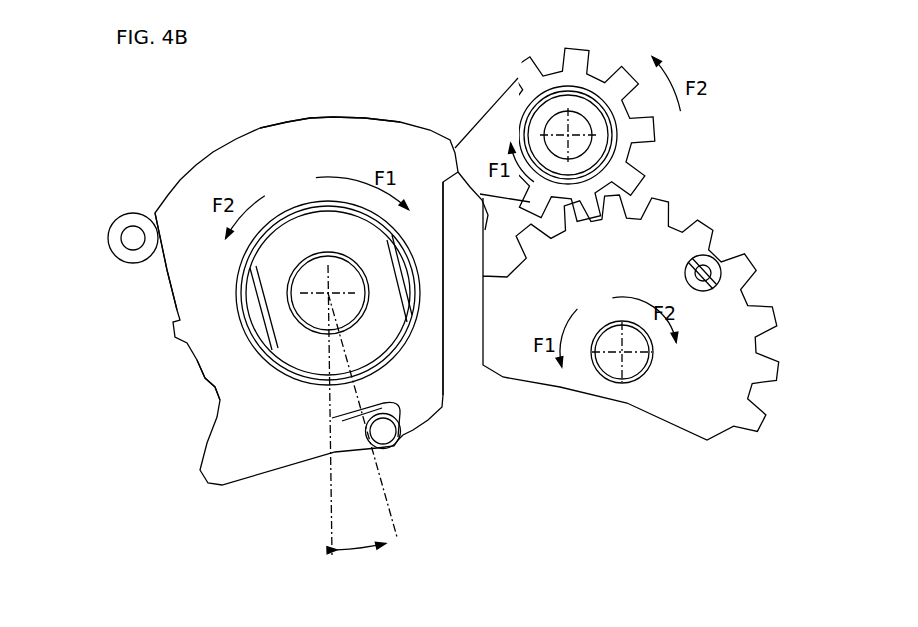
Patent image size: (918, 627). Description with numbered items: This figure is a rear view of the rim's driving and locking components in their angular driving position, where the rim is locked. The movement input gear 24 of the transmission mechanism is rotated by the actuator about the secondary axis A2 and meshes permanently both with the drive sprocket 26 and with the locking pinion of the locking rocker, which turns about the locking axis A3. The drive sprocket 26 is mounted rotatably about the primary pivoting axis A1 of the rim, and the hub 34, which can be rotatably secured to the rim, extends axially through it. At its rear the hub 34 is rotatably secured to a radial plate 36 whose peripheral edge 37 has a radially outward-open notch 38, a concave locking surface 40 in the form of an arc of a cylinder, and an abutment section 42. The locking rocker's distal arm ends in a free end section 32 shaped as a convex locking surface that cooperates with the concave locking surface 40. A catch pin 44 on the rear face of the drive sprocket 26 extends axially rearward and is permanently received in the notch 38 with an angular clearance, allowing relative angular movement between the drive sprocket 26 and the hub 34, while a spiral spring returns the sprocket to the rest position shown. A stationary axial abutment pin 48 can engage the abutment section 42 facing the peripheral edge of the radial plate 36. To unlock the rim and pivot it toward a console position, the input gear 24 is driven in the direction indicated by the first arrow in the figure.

The movement input gear 24 is at (710, 226).
The drive sprocket 26 is at (192, 380).
The free end section 32 is at (444, 380).
The hub 34 is at (288, 366).
The radial plate 36 is at (355, 138).
The peripheral edge 37 is at (308, 115).
The notch 38 is at (343, 417).
The concave locking surface 40 is at (480, 194).
The abutment section 42 is at (167, 273).
The catch pin 44 is at (383, 433).
The stationary axial abutment pin 48 is at (120, 215).
The primary pivoting axis A1 is at (328, 293).
The secondary axis A2 is at (622, 357).
The locking axis A3 is at (568, 133).